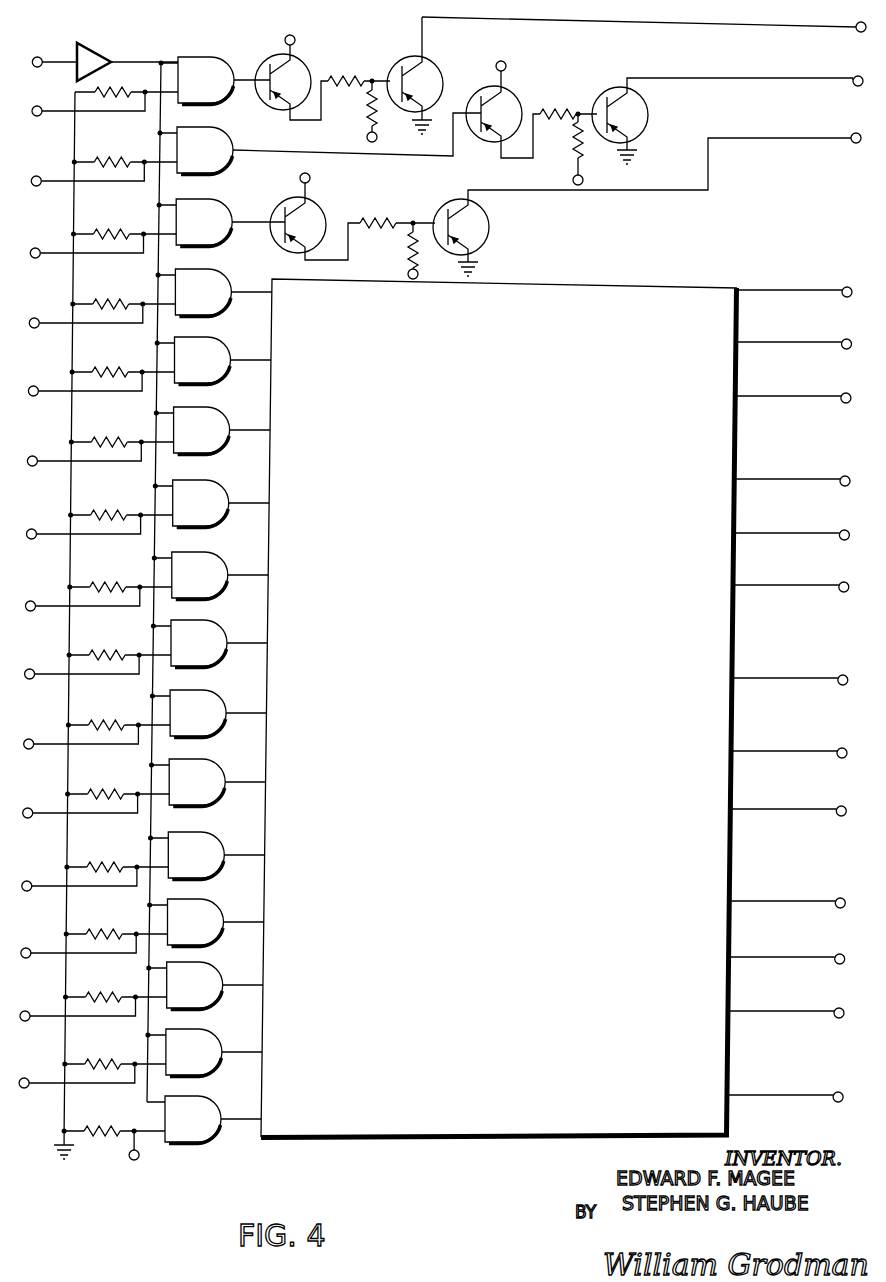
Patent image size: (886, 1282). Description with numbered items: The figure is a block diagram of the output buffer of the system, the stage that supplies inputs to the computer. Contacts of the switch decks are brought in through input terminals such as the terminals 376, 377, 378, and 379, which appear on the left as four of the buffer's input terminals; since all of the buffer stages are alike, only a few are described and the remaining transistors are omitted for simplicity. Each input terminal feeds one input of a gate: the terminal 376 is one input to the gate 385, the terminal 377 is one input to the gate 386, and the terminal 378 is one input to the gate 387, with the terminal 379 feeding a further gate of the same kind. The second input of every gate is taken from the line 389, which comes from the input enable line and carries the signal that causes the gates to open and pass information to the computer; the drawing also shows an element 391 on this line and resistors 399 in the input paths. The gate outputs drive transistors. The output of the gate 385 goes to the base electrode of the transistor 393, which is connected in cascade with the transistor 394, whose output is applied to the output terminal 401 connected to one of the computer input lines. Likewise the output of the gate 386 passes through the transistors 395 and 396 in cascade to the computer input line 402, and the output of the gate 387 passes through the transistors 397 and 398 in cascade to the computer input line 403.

The terminal 376 is at (29, 108).
The terminal 377 is at (29, 178).
The terminal 378 is at (29, 253).
The terminal 379 is at (29, 321).
The gate 385 is at (198, 60).
The gate 386 is at (206, 136).
The gate 387 is at (206, 203).
The line 389 is at (53, 48).
The amplifier 391 is at (93, 48).
The transistor 393 is at (302, 68).
The transistor 394 is at (392, 70).
The transistor 395 is at (467, 102).
The transistor 396 is at (595, 103).
The transistor 397 is at (320, 218).
The transistor 398 is at (425, 218).
The resistor 399 is at (103, 87).
The output terminal 401 is at (779, 30).
The computer input line 402 is at (779, 82).
The computer input line 403 is at (774, 142).